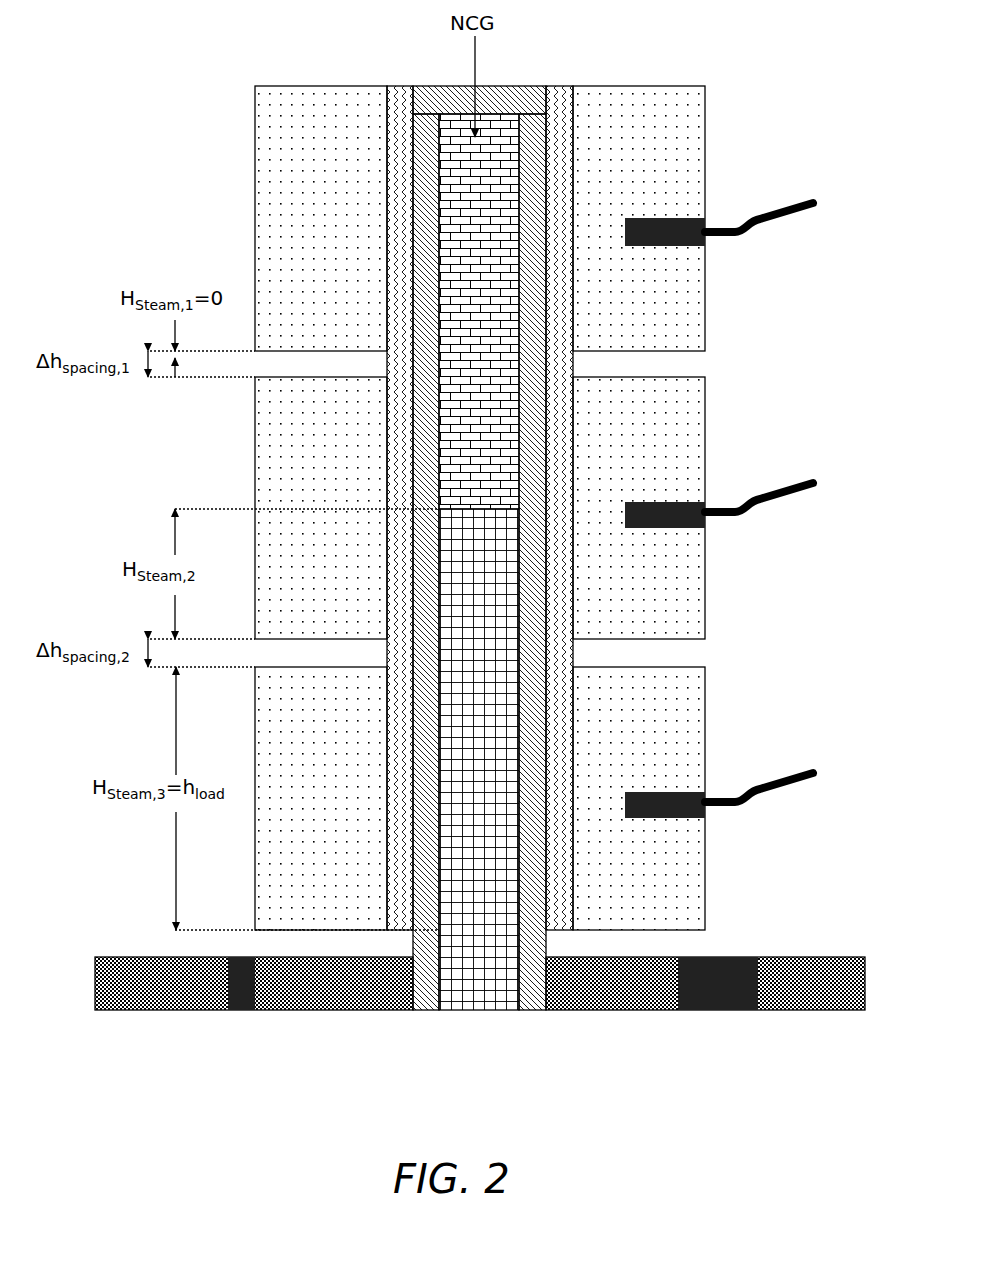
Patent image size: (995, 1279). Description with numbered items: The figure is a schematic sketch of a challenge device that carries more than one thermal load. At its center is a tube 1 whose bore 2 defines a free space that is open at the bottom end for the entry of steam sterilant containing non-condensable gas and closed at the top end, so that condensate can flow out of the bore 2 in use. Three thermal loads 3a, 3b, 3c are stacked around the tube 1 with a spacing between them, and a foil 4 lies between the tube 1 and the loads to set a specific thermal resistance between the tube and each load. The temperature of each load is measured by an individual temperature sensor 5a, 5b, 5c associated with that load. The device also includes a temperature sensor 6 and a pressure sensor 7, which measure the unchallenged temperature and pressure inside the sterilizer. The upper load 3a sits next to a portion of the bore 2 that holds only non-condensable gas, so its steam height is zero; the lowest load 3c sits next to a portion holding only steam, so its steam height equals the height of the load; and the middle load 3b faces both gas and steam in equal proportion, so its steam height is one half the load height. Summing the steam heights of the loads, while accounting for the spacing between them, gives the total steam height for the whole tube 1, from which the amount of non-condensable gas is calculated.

The tube 1 is at (533, 1014).
The bore 2 is at (490, 1000).
The thermal load 3a is at (683, 164).
The thermal load 3b is at (683, 454).
The thermal load 3c is at (683, 744).
The foil 4 is at (549, 905).
The temperature sensor 5a is at (708, 240).
The temperature sensor 5b is at (708, 530).
The temperature sensor 5c is at (708, 820).
The temperature sensor 6 is at (233, 1013).
The pressure sensor 7 is at (740, 1014).